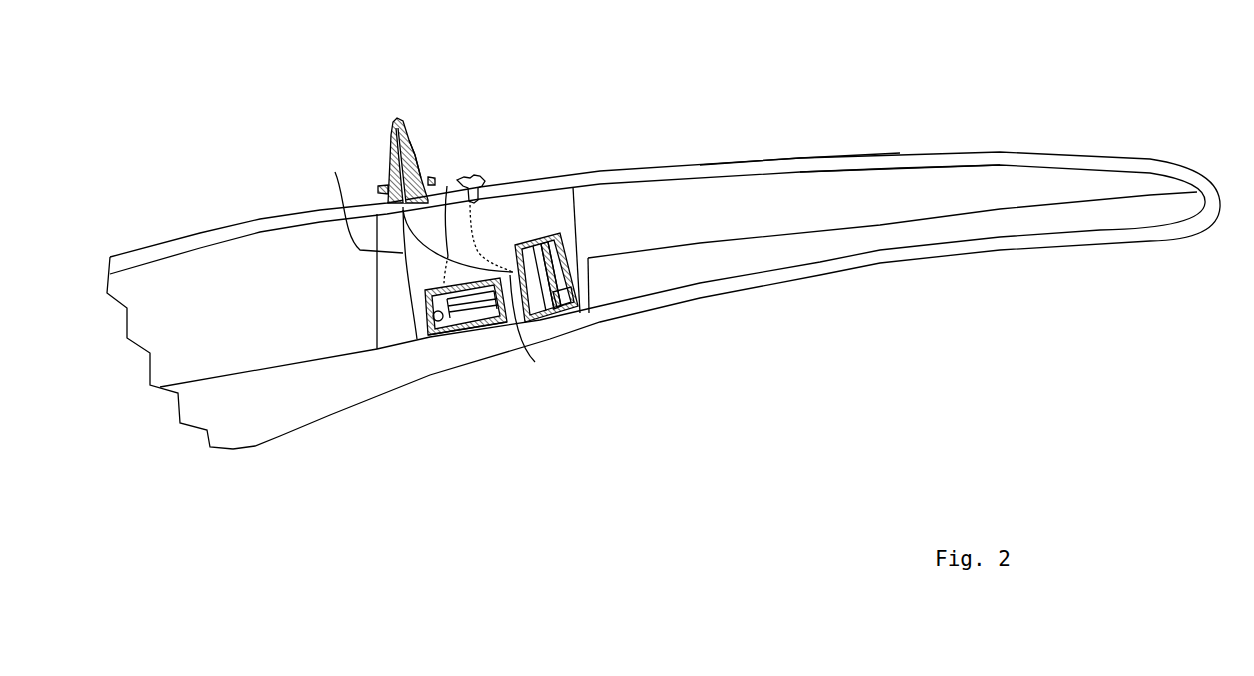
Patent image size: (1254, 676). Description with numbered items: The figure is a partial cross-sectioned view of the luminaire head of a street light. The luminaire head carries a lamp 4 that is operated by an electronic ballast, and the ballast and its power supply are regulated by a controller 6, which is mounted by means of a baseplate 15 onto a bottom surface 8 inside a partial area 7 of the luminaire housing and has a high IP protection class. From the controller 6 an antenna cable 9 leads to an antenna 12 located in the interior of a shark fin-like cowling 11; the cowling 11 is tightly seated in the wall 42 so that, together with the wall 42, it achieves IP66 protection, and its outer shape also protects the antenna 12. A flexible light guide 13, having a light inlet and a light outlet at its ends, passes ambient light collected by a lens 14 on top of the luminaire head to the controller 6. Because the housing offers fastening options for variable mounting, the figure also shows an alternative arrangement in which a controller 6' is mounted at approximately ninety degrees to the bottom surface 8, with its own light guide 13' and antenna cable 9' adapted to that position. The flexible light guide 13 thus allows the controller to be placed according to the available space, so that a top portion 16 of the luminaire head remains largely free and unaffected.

The lamp 4 is at (693, 268).
The controller 6 is at (466, 349).
The controller 6' is at (571, 334).
The partial area 7 is at (548, 210).
The bottom surface 8 is at (407, 343).
The antenna cable 9 is at (362, 195).
The antenna cable 9' is at (542, 331).
The cowling 11 is at (428, 148).
The antenna 12 is at (390, 161).
The flexible light guide 13 is at (464, 169).
The light guide 13' is at (504, 234).
The lens 14 is at (471, 177).
The baseplate 15 is at (497, 327).
The top portion 16 is at (764, 152).
The wall 42 is at (847, 166).